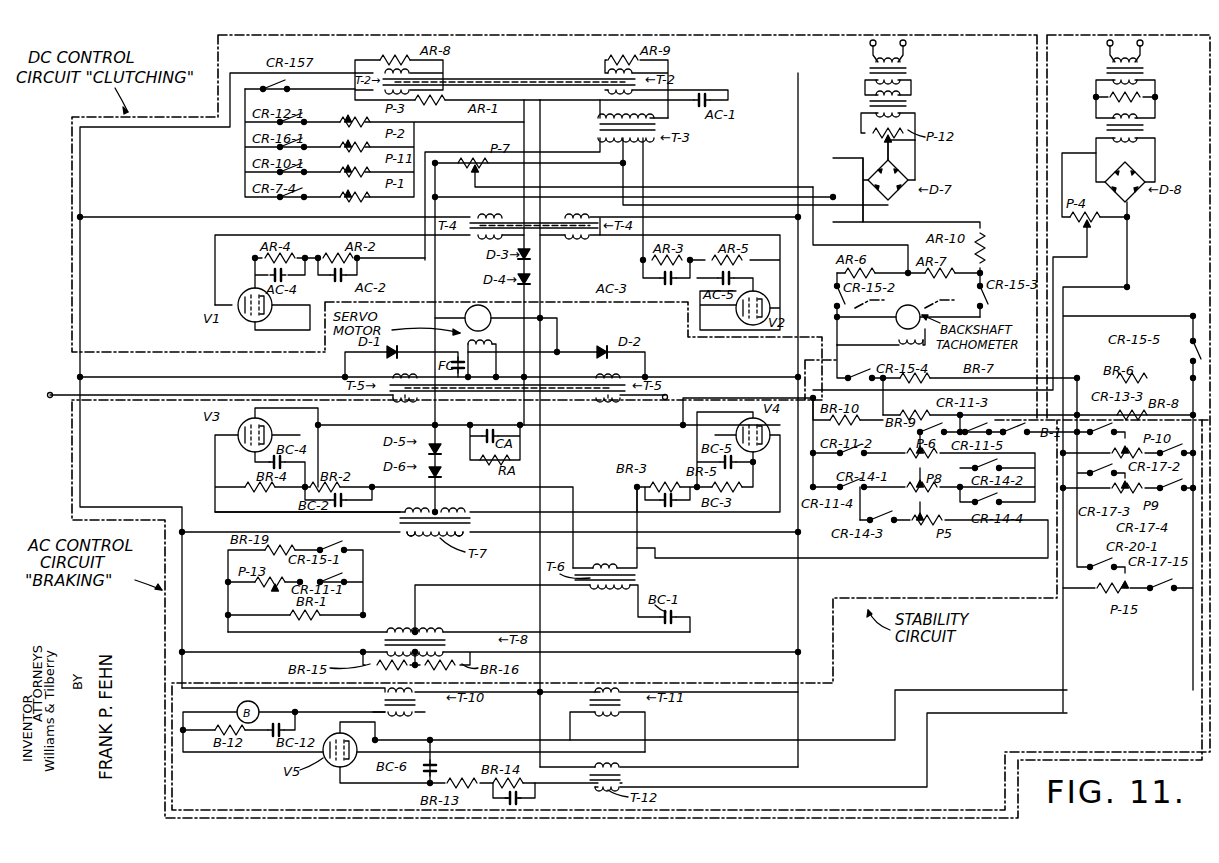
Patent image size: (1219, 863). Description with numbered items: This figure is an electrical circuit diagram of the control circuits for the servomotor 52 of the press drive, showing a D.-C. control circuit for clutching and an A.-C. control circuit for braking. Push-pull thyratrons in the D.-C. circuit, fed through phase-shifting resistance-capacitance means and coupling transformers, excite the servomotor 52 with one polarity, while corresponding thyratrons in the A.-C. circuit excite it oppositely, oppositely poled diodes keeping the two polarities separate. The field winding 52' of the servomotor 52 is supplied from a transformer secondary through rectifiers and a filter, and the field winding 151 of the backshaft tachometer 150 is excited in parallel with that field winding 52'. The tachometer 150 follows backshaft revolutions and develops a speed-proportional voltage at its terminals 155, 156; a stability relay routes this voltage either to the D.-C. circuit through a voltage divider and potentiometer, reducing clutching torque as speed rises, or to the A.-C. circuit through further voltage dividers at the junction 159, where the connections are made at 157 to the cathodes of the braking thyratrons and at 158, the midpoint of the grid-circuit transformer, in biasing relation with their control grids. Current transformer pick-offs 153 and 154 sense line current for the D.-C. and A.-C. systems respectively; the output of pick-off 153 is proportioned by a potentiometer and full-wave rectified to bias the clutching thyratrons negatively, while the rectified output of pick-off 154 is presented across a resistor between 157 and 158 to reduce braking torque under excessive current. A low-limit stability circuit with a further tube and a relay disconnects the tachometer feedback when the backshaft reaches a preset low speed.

The servomotor 52 is at (496, 328).
The field winding 52' is at (492, 358).
The tachometer 150 is at (895, 321).
The field winding 151 is at (899, 350).
The current transformer pick-off 153 is at (856, 78).
The current transformer pick-off 154 is at (1100, 70).
The tachometer terminal 155 is at (853, 309).
The tachometer terminal 156 is at (963, 295).
The cathode connection 157 is at (683, 413).
The midpoint of grid-circuit transformer T-6 158 is at (648, 556).
The conductor junction 159 is at (880, 400).